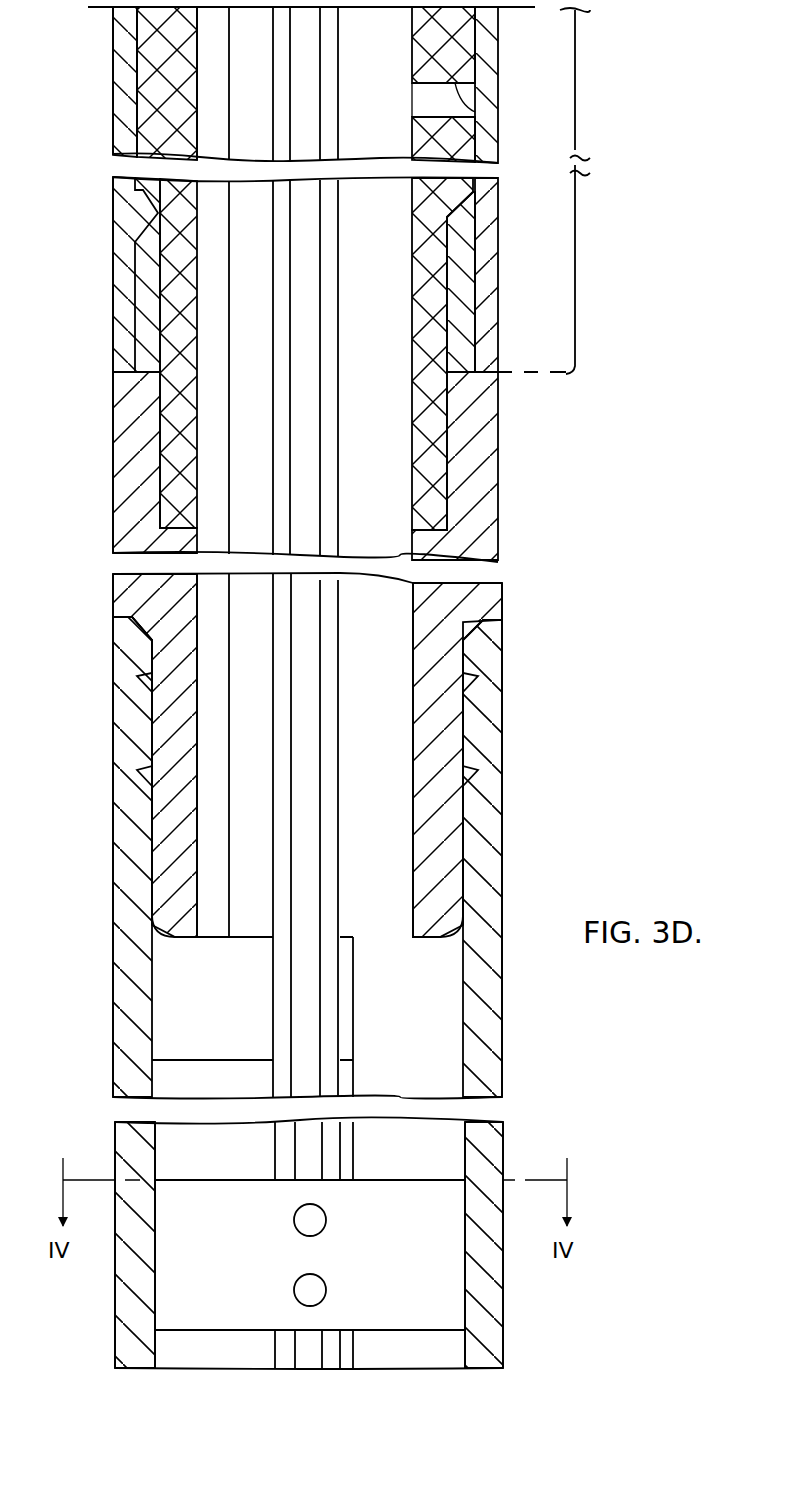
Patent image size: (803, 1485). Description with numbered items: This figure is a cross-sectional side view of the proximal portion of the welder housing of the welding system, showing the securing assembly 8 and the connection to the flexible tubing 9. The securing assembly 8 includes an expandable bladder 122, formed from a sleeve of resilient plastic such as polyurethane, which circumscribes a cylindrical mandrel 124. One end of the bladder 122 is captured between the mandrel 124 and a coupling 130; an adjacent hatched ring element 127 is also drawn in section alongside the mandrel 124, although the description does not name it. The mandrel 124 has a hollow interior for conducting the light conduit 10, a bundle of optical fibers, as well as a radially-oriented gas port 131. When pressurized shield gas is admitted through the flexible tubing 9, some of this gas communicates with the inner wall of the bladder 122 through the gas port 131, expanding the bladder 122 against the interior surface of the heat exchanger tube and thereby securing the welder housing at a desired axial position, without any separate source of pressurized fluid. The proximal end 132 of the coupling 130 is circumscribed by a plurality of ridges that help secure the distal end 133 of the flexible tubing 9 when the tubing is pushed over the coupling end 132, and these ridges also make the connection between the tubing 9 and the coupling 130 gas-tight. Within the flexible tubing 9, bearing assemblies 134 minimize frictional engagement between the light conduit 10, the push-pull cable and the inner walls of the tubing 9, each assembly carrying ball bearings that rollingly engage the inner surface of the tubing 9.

The securing assembly 8 is at (575, 143).
The flexible tubing 9 is at (110, 986).
The light conduit 10 is at (309, 690).
The expandable bladder 122 is at (488, 38).
The cylindrical mandrel 124 is at (455, 82).
The sleeve 127 is at (462, 323).
The coupling 130 is at (472, 488).
The gas port 131 is at (460, 108).
The proximal end of the coupling 132 is at (447, 812).
The distal end of the flexible tubing 133 is at (487, 661).
The bearing assemblies 134 is at (368, 1176).